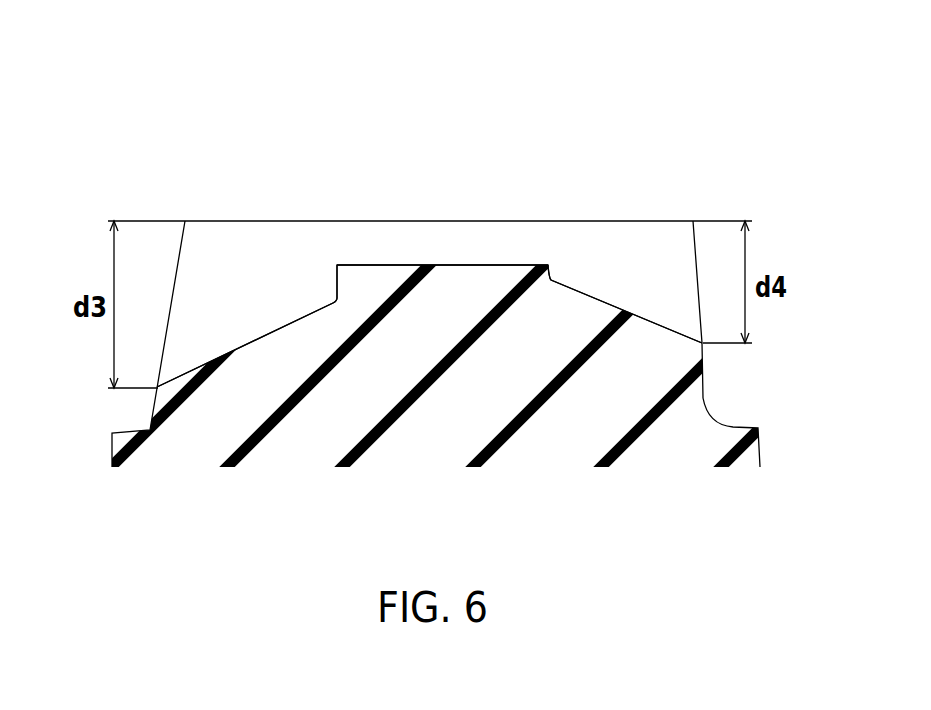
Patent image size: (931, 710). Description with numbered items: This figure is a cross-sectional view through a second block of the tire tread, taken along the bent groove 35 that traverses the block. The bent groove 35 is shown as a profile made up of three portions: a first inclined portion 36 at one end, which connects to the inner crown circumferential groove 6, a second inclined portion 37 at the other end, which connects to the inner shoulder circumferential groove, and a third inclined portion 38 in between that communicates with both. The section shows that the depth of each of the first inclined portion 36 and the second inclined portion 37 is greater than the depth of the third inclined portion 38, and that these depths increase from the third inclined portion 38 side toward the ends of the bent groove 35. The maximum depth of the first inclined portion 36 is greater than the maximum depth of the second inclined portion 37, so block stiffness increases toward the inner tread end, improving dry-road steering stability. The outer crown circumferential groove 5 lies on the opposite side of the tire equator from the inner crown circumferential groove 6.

The outer crown circumferential groove 5 is at (132, 417).
The inner crown circumferential groove 6 is at (732, 410).
The bent groove 35 is at (551, 106).
The first inclined portion 36 is at (260, 312).
The second inclined portion 37 is at (615, 293).
The third inclined portion 38 is at (450, 262).